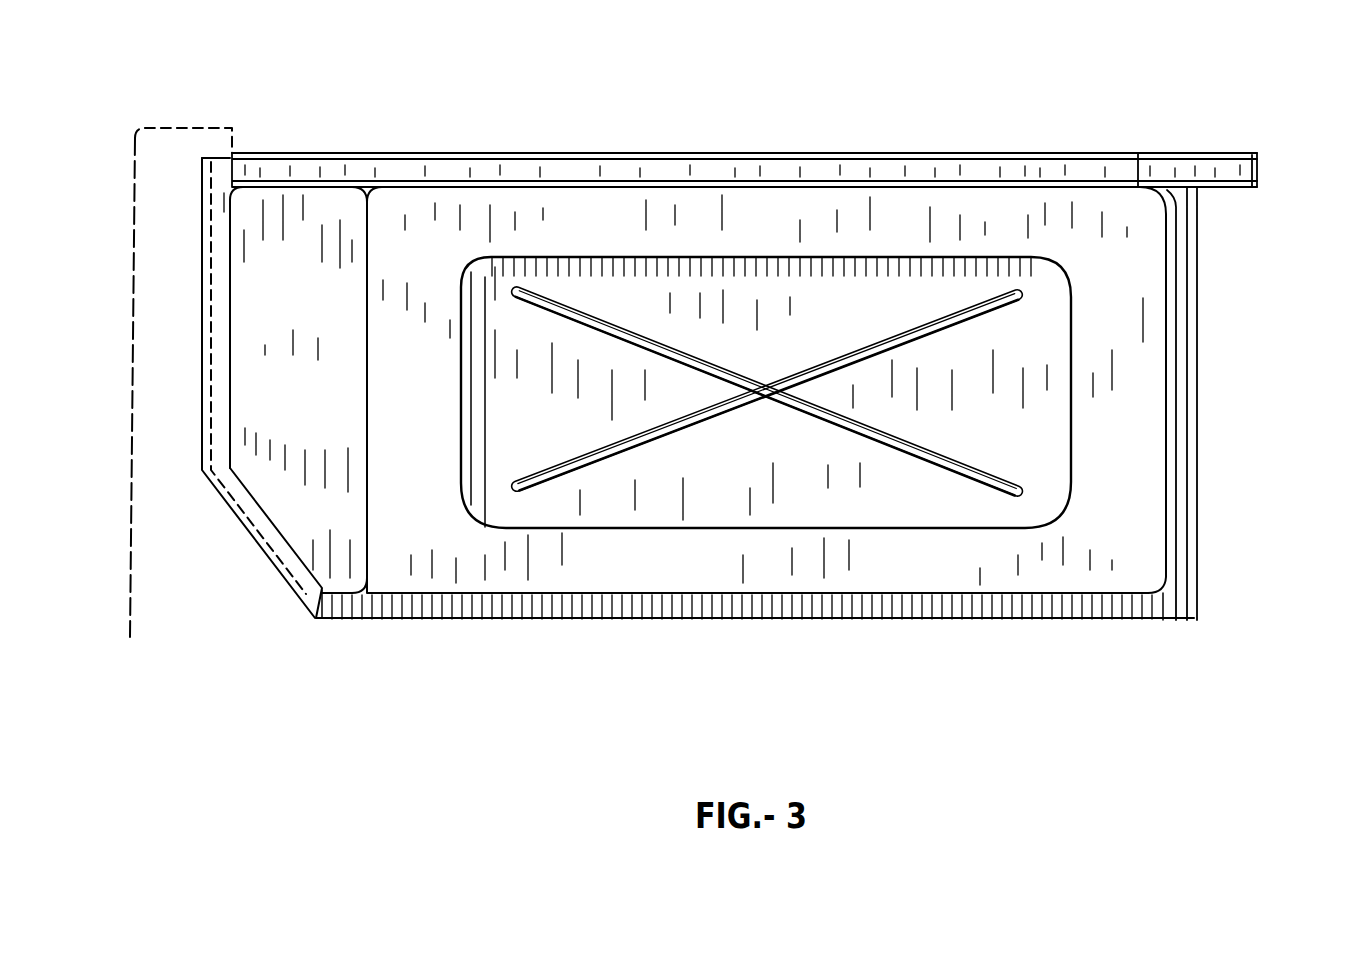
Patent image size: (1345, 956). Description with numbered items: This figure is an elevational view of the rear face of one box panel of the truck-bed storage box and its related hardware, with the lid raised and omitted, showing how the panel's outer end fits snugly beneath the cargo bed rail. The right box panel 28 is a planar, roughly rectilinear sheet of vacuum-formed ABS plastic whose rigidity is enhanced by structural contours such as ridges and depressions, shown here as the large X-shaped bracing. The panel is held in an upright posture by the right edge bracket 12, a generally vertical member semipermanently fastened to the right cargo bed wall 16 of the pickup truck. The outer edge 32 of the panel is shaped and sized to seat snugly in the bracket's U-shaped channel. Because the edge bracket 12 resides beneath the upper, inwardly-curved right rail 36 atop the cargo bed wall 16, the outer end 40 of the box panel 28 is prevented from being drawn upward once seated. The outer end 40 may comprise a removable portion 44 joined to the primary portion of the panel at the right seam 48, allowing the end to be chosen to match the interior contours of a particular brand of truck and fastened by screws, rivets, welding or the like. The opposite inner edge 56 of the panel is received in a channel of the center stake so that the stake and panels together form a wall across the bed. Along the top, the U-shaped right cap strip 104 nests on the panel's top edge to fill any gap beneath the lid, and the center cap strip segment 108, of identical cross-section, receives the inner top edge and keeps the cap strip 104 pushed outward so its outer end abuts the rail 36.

The right edge bracket 12 is at (218, 325).
The right cargo bed wall 16 is at (163, 272).
The right box panel 28 is at (1130, 652).
The outer edge 32 is at (210, 206).
The right rail 36 is at (145, 125).
The outer end 40 is at (188, 388).
The removable portion 44 is at (319, 407).
The right seam 48 is at (367, 485).
The inner edge 56 is at (1196, 345).
The right cap strip 104 is at (803, 153).
The center cap strip segment 108 is at (1233, 155).